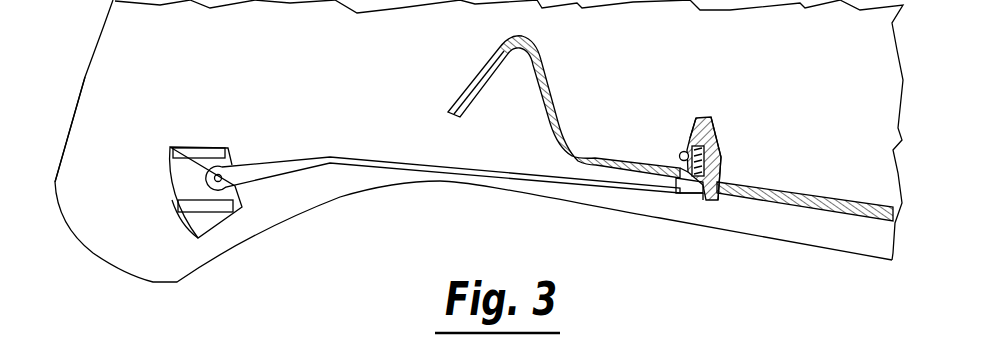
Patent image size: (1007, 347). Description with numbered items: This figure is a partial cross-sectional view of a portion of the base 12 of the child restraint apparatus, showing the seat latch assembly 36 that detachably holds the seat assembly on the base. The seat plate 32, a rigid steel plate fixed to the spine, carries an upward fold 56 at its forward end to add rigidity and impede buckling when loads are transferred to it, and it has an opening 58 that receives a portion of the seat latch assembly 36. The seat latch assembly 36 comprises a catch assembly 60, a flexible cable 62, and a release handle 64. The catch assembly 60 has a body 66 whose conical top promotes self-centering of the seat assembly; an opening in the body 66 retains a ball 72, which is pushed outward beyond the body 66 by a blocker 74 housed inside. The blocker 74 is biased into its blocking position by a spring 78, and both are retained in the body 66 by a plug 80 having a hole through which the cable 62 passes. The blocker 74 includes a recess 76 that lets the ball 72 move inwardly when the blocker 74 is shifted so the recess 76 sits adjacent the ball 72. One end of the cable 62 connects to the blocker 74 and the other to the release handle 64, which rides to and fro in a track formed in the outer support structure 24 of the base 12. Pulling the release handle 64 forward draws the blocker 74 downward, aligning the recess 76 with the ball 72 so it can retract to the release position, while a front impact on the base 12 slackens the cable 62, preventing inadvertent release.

The base 12 is at (84, 76).
The outer support structure 24 is at (60, 152).
The seat plate 32 is at (813, 197).
The seat latch assembly 36 is at (182, 227).
The upward fold 56 is at (512, 35).
The opening 58 is at (680, 167).
The catch assembly 60 is at (713, 118).
The flexible cable 62 is at (479, 180).
The release handle 64 is at (217, 230).
The body 66 is at (714, 133).
The ball 72 is at (681, 152).
The blocker 74 is at (716, 163).
The recess 76 is at (687, 142).
The spring 78 is at (703, 200).
The plug 80 is at (700, 193).